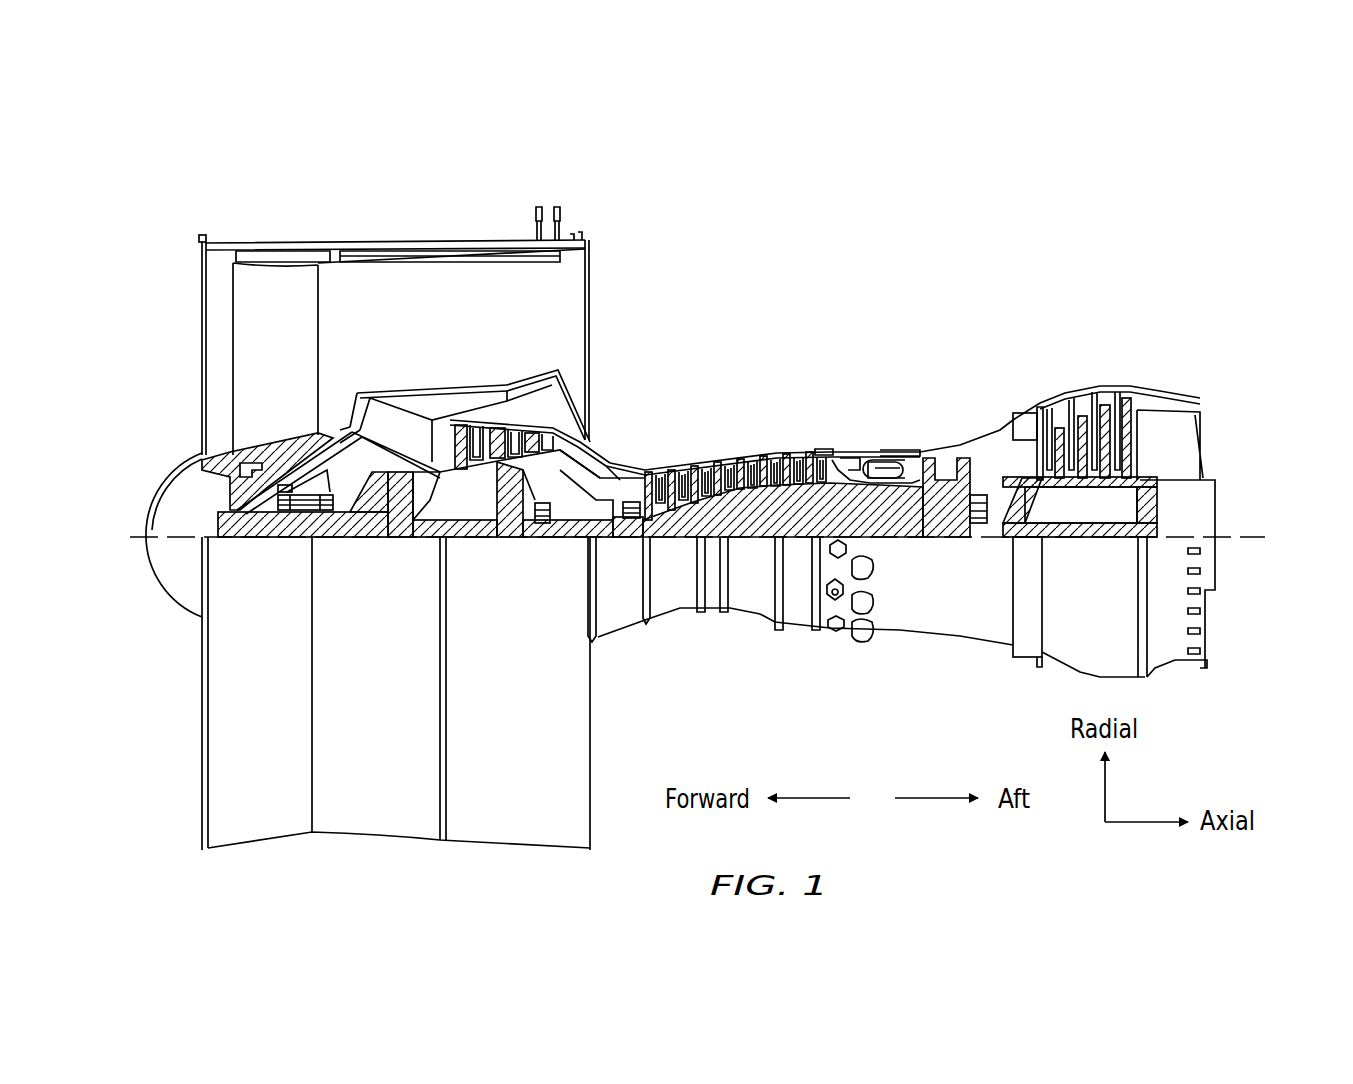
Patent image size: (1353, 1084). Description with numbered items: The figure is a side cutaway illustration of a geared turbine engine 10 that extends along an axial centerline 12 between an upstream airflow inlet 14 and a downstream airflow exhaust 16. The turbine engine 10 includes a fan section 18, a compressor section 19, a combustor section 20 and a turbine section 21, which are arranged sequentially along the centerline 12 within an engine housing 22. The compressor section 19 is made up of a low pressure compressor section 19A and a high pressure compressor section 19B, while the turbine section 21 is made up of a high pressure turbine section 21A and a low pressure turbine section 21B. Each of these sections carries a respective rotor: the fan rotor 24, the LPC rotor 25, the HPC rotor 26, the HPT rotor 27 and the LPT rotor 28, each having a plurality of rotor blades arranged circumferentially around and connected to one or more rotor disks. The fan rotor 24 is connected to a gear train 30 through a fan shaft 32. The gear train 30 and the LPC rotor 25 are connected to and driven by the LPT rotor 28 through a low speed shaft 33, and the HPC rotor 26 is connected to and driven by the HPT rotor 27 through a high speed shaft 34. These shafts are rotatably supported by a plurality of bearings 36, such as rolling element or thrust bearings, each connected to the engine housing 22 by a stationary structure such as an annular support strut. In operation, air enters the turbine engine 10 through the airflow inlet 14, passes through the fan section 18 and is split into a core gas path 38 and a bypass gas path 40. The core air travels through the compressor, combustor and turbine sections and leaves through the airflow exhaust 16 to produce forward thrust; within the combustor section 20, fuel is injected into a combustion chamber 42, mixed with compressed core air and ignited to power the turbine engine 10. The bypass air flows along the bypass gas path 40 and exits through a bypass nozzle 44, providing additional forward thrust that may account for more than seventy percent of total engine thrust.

The geared turbine engine 10 is at (172, 224).
The axial centerline 12 is at (1256, 565).
The airflow inlet 14 is at (202, 308).
The airflow exhaust 16 is at (1205, 440).
The fan section 18 is at (360, 216).
The compressor section 19 is at (795, 162).
The low pressure compressor section 19A is at (590, 200).
The high pressure compressor section 19B is at (795, 383).
The combustor section 20 is at (875, 475).
The turbine section 21 is at (1168, 318).
The high pressure turbine section 21A is at (995, 383).
The low pressure turbine section 21B is at (1168, 383).
The engine housing 22 is at (606, 643).
The fan rotor 24 is at (205, 458).
The LPC rotor 25 is at (498, 505).
The HPC rotor 26 is at (748, 505).
The HPT rotor 27 is at (945, 515).
The LPT rotor 28 is at (1085, 485).
The gear train 30 is at (400, 540).
The fan shaft 32 is at (265, 535).
The low speed shaft 33 is at (800, 540).
The high speed shaft 34 is at (885, 525).
The bearings 36 is at (303, 532).
The core gas path 38 is at (607, 467).
The bypass gas path 40 is at (444, 327).
The combustion chamber 42 is at (880, 466).
The bypass nozzle 44 is at (589, 293).